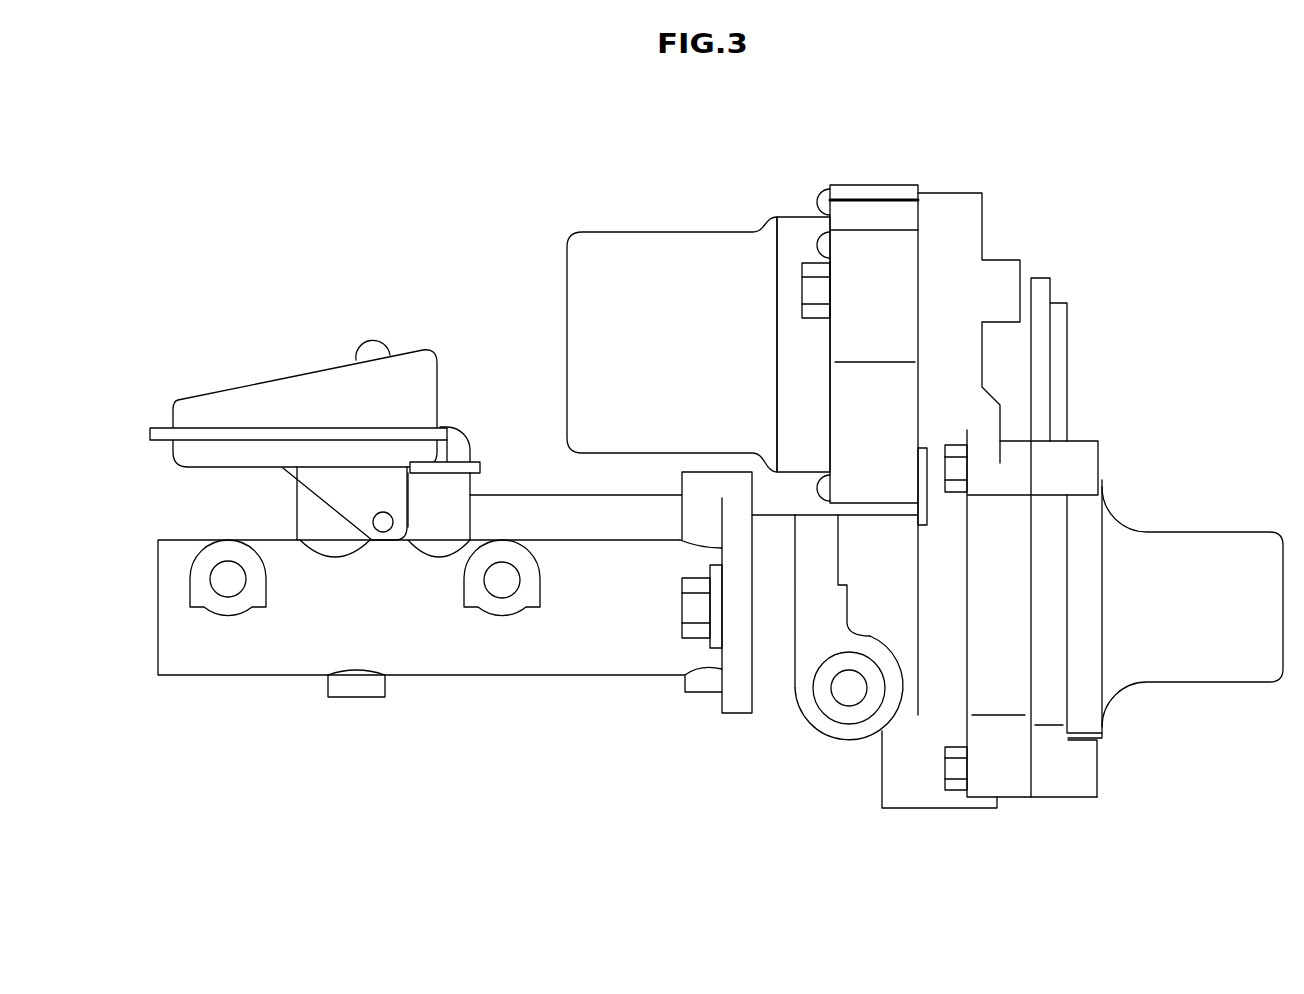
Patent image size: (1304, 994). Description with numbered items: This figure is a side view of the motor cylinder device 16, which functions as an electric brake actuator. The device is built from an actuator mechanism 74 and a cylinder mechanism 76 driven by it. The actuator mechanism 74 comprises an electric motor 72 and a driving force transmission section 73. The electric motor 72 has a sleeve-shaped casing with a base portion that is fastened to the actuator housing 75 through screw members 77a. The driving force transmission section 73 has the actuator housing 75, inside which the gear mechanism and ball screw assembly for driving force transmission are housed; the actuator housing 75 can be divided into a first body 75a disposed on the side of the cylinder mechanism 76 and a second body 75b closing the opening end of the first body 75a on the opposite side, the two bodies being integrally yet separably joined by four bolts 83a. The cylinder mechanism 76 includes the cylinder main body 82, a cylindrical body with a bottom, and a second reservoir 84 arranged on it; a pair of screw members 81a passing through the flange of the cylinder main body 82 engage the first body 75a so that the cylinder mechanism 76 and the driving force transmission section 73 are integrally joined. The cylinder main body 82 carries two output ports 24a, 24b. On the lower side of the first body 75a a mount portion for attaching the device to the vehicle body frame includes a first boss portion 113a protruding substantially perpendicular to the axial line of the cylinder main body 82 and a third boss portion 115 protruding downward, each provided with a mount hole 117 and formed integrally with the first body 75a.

The motor cylinder device 16 is at (1084, 177).
The actuator mechanism 74 is at (965, 121).
The electric motor 72 is at (738, 218).
The driving force transmission section 73 is at (955, 190).
The screw member 77a is at (802, 292).
The second reservoir 84 is at (276, 368).
The cylinder mechanism 76 is at (406, 687).
The cylinder main body 82 is at (575, 648).
The output port 24b is at (228, 585).
The output port 24a is at (500, 585).
The screw member 81a is at (682, 607).
The first boss portion 113a is at (843, 742).
The mount hole 117 is at (838, 707).
The third boss portion 115 is at (930, 812).
The bolt 83a is at (932, 470).
The actuator housing 75 is at (1115, 869).
The first body 75a is at (993, 770).
The second body 75b is at (1060, 780).